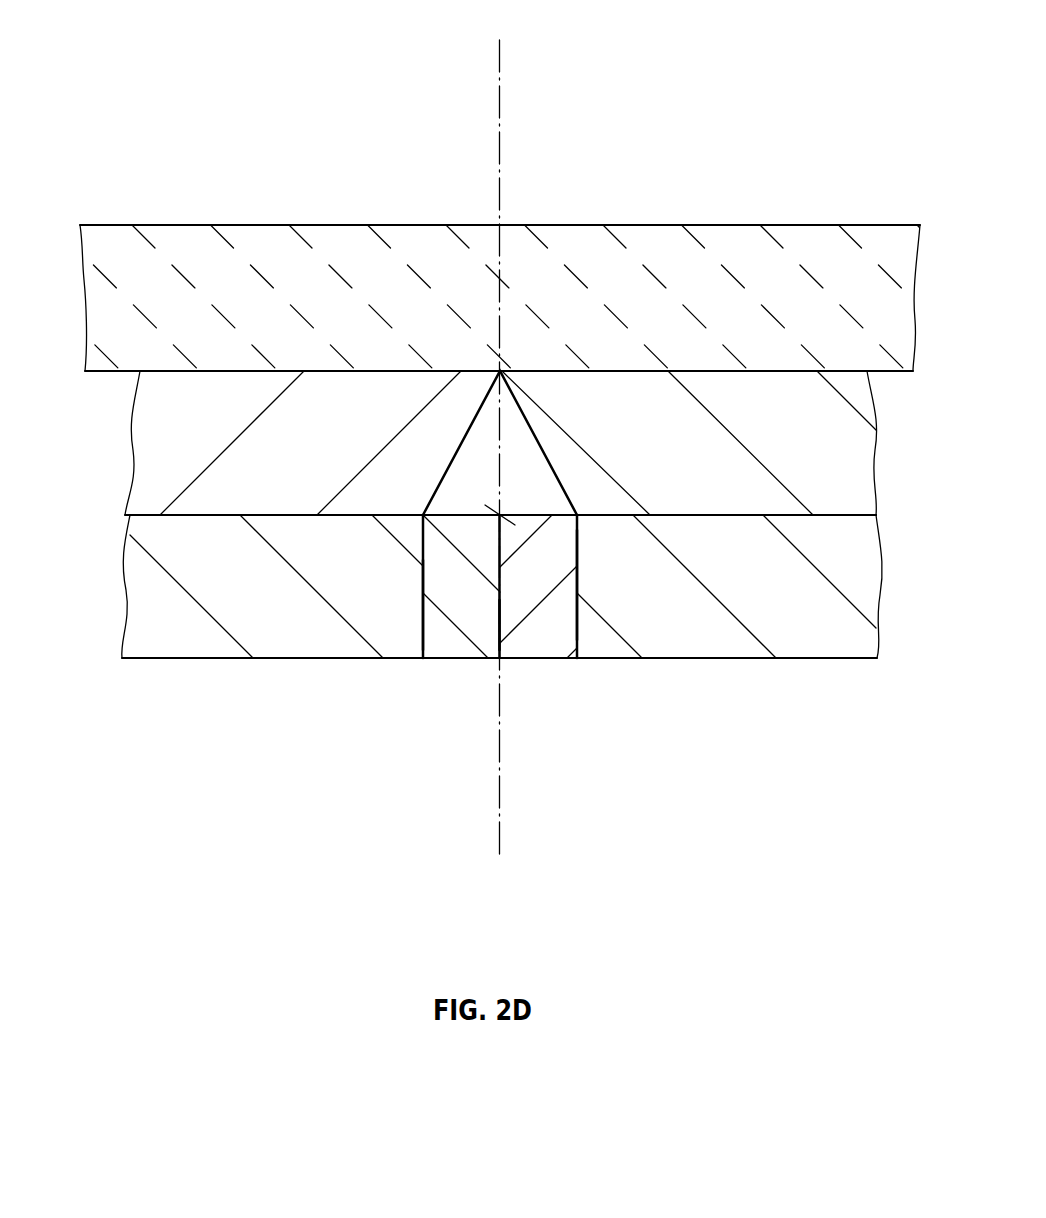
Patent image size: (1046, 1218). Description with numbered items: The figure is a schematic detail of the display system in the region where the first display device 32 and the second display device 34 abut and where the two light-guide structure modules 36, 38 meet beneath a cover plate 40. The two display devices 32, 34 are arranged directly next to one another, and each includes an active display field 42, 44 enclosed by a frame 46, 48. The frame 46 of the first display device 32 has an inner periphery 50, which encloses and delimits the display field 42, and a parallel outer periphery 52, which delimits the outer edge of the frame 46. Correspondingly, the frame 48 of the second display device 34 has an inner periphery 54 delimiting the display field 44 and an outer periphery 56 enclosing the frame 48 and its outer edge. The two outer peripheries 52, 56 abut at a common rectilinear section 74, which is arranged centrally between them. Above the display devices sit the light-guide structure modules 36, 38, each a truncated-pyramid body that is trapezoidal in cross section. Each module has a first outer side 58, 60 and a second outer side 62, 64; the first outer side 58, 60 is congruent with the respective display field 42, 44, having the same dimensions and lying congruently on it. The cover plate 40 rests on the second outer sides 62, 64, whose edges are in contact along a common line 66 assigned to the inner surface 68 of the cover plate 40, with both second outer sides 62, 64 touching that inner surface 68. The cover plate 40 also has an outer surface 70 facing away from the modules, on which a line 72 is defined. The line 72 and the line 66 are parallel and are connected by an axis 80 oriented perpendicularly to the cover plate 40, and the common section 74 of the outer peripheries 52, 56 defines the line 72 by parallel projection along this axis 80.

The axis 80 is at (498, 97).
The cover plate 40 is at (303, 225).
The outer surface 70 is at (655, 225).
The line 72 is at (500, 225).
The second outer side 62 is at (326, 371).
The second outer side 64 is at (642, 371).
The common line 66 is at (500, 371).
The inner surface 68 is at (653, 378).
The common rectilinear section 74 is at (500, 515).
The light-guide structure module 36 is at (158, 430).
The light-guide structure module 38 is at (840, 443).
The first display device 32 is at (190, 688).
The second display device 34 is at (826, 688).
The display field 42 is at (170, 518).
The display field 44 is at (838, 518).
The frame 46 is at (462, 660).
The frame 48 is at (538, 660).
The inner periphery 50 is at (423, 607).
The outer periphery 52 is at (500, 623).
The inner periphery 54 is at (577, 568).
The outer periphery 56 is at (500, 567).
The first outer side 58 is at (218, 517).
The first outer side 60 is at (745, 517).